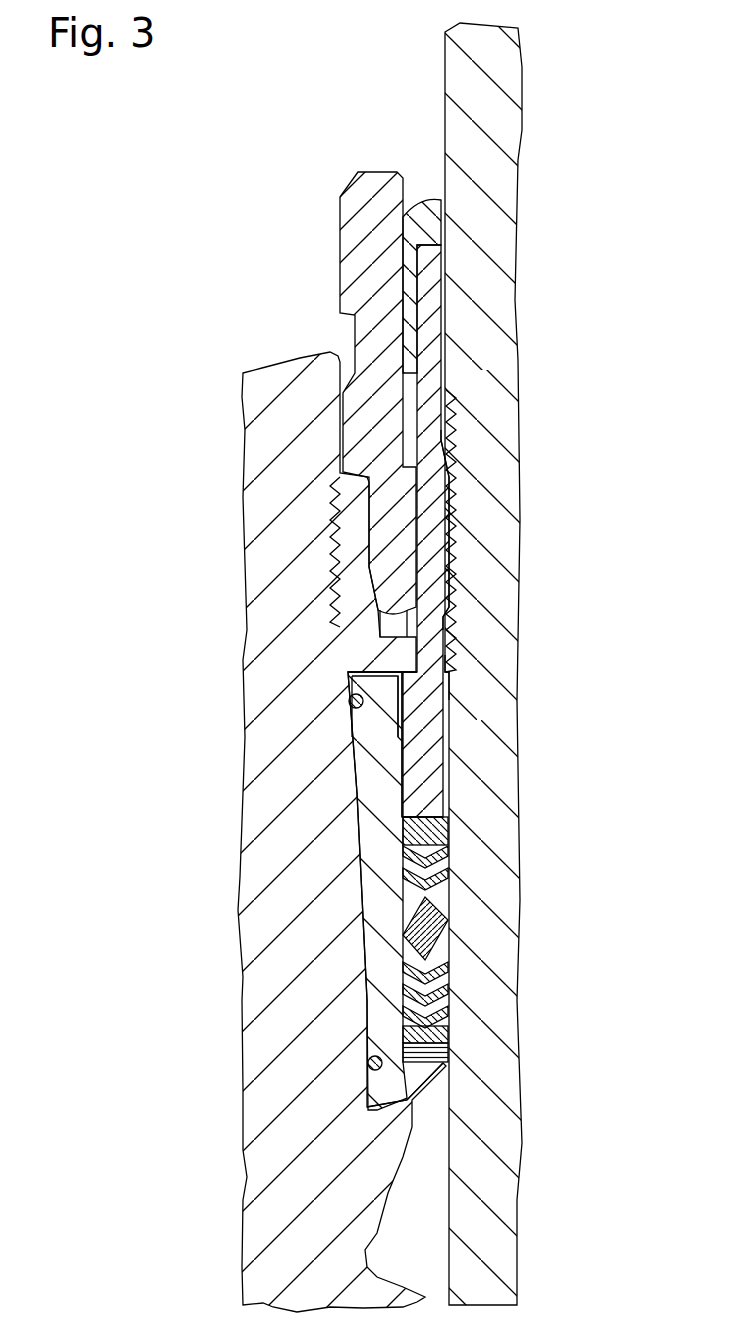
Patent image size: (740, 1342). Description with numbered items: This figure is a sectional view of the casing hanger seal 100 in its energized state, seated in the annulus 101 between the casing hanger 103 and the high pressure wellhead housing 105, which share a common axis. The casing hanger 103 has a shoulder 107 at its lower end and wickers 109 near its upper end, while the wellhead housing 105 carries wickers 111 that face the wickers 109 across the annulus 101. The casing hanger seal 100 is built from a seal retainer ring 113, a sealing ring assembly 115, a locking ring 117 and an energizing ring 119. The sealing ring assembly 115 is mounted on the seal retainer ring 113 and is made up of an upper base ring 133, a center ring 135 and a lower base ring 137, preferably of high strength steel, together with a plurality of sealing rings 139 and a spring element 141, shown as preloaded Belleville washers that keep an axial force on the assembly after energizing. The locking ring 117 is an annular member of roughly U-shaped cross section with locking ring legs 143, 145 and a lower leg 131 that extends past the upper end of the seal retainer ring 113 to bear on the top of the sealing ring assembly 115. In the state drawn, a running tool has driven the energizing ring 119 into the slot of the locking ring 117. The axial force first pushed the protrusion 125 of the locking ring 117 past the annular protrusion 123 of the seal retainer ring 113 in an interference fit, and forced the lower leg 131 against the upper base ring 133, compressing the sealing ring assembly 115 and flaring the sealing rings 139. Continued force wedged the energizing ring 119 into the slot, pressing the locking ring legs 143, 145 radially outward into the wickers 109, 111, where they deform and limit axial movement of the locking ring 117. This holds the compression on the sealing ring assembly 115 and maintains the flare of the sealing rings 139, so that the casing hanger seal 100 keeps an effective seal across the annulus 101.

The casing hanger seal 100 is at (308, 380).
The annulus 101 is at (454, 436).
The casing hanger 103 is at (382, 832).
The high pressure wellhead housing 105 is at (523, 660).
The shoulder 107 is at (413, 1100).
The wickers 109 is at (334, 515).
The wickers 111 is at (457, 496).
The seal retainer ring 113 is at (386, 891).
The sealing ring assembly 115 is at (539, 948).
The locking ring 117 is at (447, 681).
The energizing ring 119 is at (353, 189).
The annular protrusion 123 is at (399, 738).
The protrusion 125 is at (409, 742).
The lower leg 131 is at (434, 783).
The upper base ring 133 is at (450, 830).
The center ring 135 is at (450, 938).
The lower base ring 137 is at (450, 1032).
The sealing rings 139 is at (450, 884).
The spring element 141 is at (500, 1057).
The locking ring leg 143 is at (440, 548).
The locking ring leg 145 is at (339, 568).